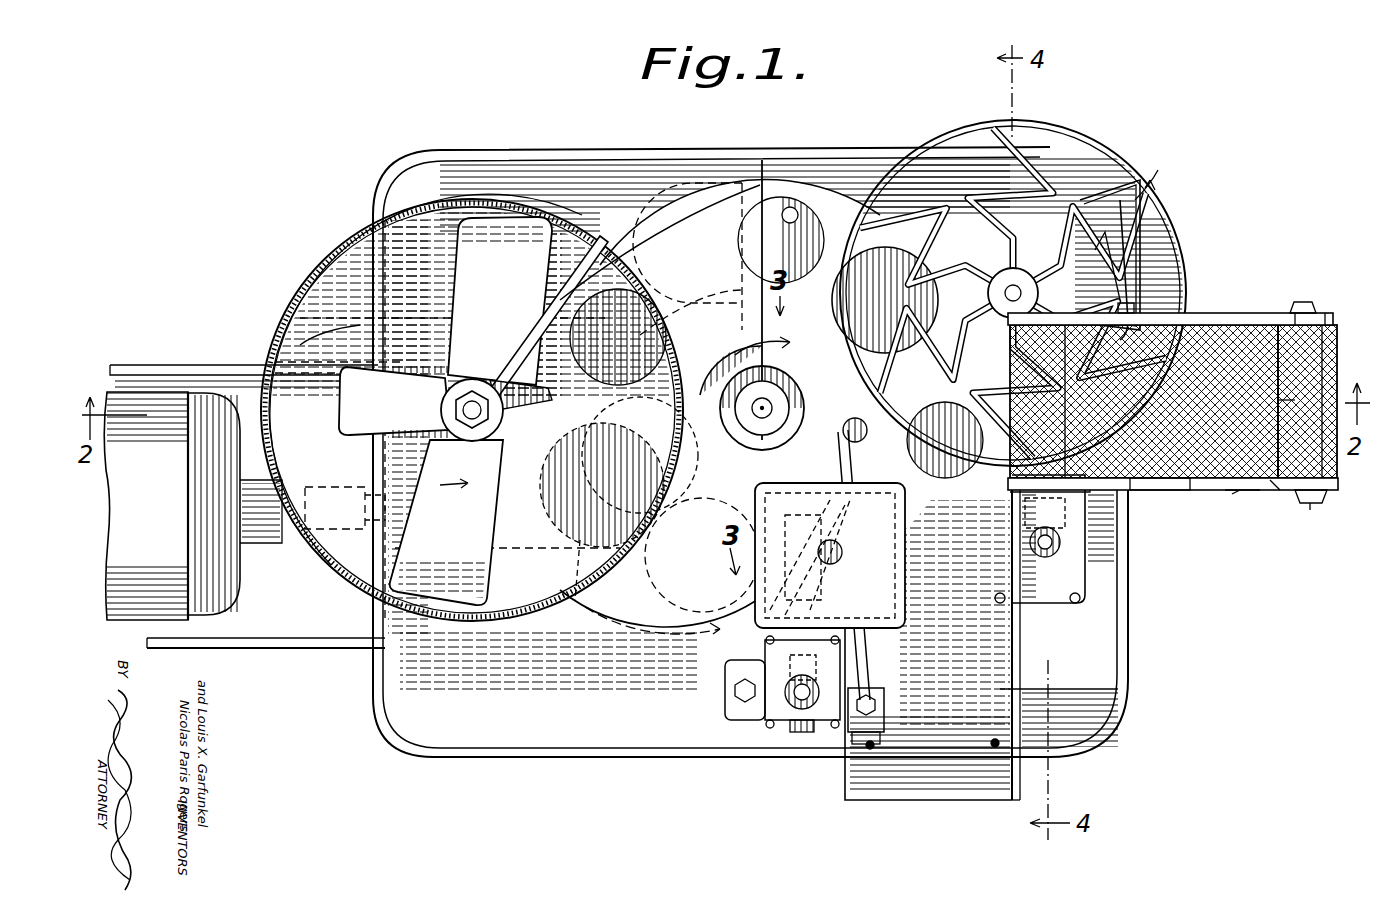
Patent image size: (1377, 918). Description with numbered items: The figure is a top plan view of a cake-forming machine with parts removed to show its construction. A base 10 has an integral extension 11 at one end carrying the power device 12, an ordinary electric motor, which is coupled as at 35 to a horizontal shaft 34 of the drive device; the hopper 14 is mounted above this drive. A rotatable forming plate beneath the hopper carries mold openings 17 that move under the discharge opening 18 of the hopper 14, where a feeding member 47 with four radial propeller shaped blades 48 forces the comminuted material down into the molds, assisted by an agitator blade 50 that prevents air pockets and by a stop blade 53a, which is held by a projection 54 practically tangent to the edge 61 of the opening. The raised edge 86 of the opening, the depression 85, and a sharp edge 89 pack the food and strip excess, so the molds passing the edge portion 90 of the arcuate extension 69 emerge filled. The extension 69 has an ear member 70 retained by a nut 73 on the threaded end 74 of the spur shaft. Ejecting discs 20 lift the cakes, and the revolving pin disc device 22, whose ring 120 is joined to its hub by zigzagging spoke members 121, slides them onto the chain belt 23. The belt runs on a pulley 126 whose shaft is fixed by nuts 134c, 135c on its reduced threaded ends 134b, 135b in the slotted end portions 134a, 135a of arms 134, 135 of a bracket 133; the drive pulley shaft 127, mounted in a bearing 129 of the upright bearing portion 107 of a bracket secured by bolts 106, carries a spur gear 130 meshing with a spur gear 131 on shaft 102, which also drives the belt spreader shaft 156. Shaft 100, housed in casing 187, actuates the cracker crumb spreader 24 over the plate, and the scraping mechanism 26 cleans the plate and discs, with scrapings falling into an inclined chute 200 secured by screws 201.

The base 10 is at (607, 740).
The integral extension 11 is at (287, 630).
The power device 12 is at (160, 396).
The hopper 14 is at (543, 615).
The mold openings 17 is at (764, 215).
The discharge opening 18 is at (612, 290).
The ejecting discs 20 is at (991, 293).
The pin disc device 22 is at (1151, 161).
The chain belt 23 is at (1333, 330).
The cracker crumb spreader 24 is at (760, 607).
The scraping mechanism 26 is at (858, 428).
The shaft 34 is at (352, 485).
The coupling 35 is at (348, 532).
The feeding member 47 is at (437, 360).
The radial propeller shaped blades 48 is at (298, 347).
The agitator blade 50 is at (395, 402).
The stop blade 53a is at (505, 366).
The projection 54 is at (580, 246).
The edge of opening 61 is at (558, 268).
The arcuate extension 69 is at (677, 190).
The ear member 70 is at (802, 402).
The nut 73 is at (773, 395).
The threaded end 74 is at (752, 396).
The depression 85 is at (576, 570).
The edge of opening 86 is at (619, 418).
The sharp edge 89 is at (687, 259).
The edge portion 90 is at (772, 205).
The shaft 100 is at (802, 705).
The shaft 102 is at (1058, 548).
The bolts 106 is at (1110, 212).
The upright bearing portion 107 is at (1122, 282).
The ring 120 is at (1100, 689).
The spoke members 121 is at (1120, 190).
The pulley 126 is at (1202, 300).
The shaft 127 is at (1095, 500).
The bearing 129 is at (1125, 228).
The spur gear 130 is at (1062, 528).
The spur gear 131 is at (1082, 570).
The bracket 133 is at (1272, 490).
The arm 134 is at (1212, 495).
The slotted end portion 134a is at (1252, 504).
The reduced threaded end 134b is at (1308, 505).
The nut 134c is at (1318, 498).
The arm 135 is at (1200, 322).
The slotted end portion 135a is at (1318, 312).
The reduced threaded end 135b is at (1303, 302).
The nut 135c is at (1292, 310).
The shaft 156 is at (862, 655).
The casing 187 is at (770, 718).
The inclined chute 200 is at (917, 745).
The screws 201 is at (997, 745).